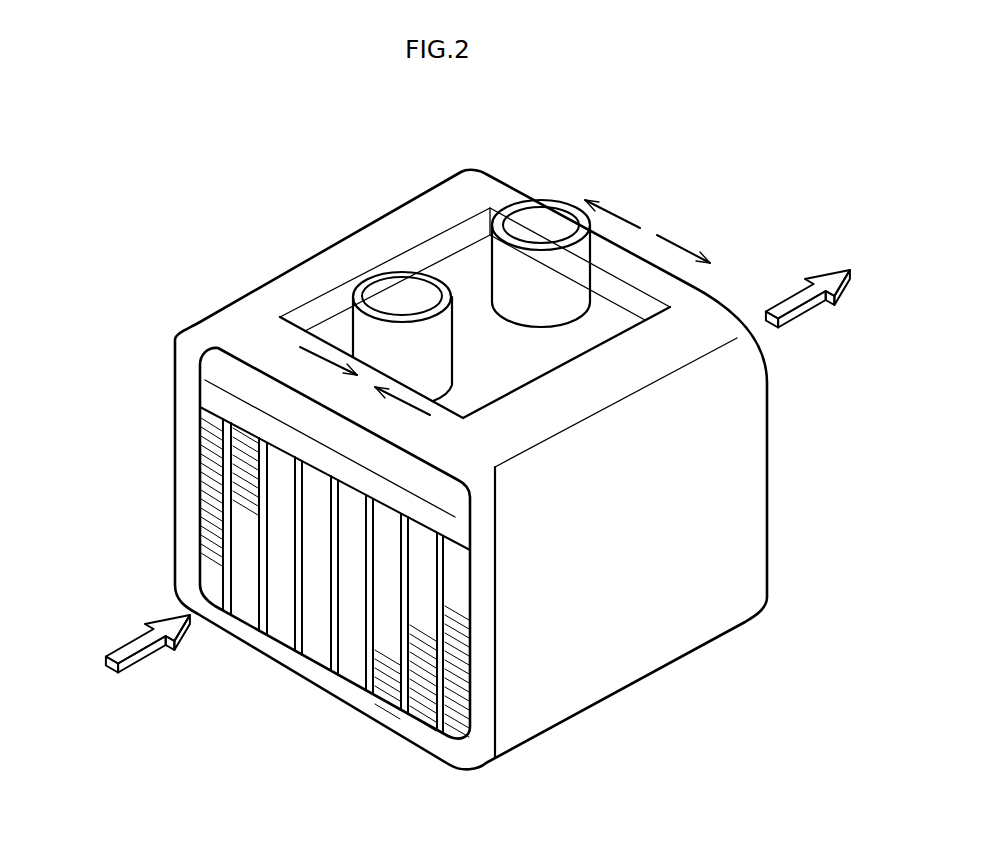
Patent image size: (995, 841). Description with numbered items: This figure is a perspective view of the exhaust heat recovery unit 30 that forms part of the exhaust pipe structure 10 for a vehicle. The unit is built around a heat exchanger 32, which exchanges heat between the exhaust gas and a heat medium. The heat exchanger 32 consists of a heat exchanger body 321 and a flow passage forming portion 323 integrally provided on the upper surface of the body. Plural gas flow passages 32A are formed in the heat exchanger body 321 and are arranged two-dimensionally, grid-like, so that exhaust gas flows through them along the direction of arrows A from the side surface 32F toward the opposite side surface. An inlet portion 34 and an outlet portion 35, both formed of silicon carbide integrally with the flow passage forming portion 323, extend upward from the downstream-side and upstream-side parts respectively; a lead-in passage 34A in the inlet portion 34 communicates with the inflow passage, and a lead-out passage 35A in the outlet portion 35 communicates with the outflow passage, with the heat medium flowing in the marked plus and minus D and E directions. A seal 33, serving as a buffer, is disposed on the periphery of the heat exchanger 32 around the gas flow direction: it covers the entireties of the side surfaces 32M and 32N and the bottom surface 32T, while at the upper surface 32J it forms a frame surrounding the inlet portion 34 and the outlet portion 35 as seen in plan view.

The exhaust pipe structure 10 is at (140, 157).
The exhaust heat recovery unit 30 is at (167, 275).
The heat exchanger 32 is at (324, 551).
The heat exchanger body 321 is at (207, 417).
The flow passage forming portion 323 is at (217, 375).
The gas flow passages 32A is at (207, 450).
The side surface 32M is at (200, 498).
The side surface 32F is at (210, 563).
The bottom surface 32T is at (351, 683).
The side surface 32N is at (470, 600).
The upper surface 32J is at (540, 363).
The seal 33 is at (760, 574).
The inlet portion 34 is at (500, 257).
The lead-in passage 34A is at (551, 218).
The outlet portion 35 is at (357, 323).
The lead-out passage 35A is at (403, 292).
The gas flow direction A is at (145, 660).